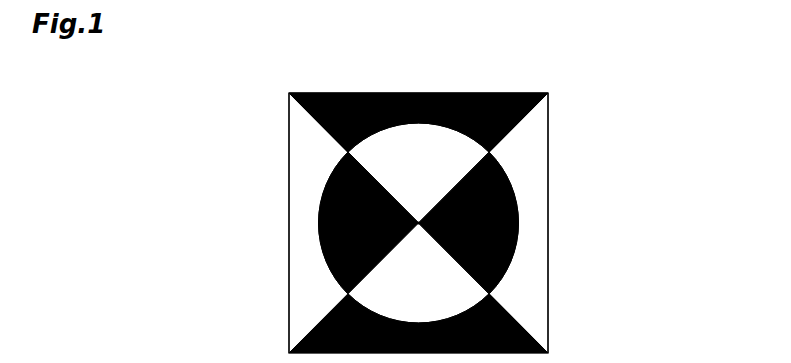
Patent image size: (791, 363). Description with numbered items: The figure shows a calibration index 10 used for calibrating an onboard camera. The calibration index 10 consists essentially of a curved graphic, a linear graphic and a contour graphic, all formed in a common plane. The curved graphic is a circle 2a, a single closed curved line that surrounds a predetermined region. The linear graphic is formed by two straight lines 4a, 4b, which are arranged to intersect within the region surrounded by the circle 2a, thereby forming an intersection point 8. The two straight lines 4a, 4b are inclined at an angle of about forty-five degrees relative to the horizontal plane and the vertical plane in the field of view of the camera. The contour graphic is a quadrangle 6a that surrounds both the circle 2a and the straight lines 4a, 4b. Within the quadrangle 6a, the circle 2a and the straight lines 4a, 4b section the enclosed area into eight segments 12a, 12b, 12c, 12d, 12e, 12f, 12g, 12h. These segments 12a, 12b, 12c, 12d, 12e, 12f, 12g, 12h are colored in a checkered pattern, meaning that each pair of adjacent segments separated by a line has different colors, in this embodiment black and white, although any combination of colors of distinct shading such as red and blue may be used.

The calibration index 10 is at (545, 72).
The circle 2a is at (512, 180).
The straight line 4a is at (305, 113).
The straight line 4b is at (517, 128).
The quadrangle 6a is at (425, 93).
The intersection point 8 is at (418, 220).
The segment 12a is at (302, 163).
The segment 12b is at (303, 93).
The segment 12c is at (535, 212).
The segment 12d is at (538, 337).
The segment 12e is at (318, 212).
The segment 12f is at (377, 147).
The segment 12g is at (510, 267).
The segment 12h is at (372, 292).